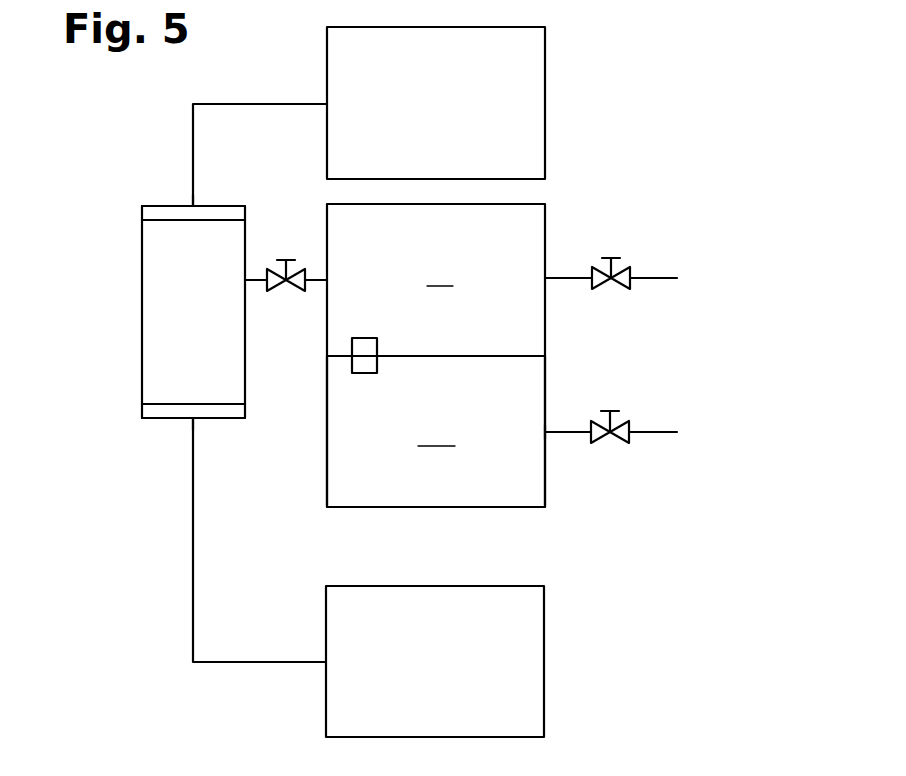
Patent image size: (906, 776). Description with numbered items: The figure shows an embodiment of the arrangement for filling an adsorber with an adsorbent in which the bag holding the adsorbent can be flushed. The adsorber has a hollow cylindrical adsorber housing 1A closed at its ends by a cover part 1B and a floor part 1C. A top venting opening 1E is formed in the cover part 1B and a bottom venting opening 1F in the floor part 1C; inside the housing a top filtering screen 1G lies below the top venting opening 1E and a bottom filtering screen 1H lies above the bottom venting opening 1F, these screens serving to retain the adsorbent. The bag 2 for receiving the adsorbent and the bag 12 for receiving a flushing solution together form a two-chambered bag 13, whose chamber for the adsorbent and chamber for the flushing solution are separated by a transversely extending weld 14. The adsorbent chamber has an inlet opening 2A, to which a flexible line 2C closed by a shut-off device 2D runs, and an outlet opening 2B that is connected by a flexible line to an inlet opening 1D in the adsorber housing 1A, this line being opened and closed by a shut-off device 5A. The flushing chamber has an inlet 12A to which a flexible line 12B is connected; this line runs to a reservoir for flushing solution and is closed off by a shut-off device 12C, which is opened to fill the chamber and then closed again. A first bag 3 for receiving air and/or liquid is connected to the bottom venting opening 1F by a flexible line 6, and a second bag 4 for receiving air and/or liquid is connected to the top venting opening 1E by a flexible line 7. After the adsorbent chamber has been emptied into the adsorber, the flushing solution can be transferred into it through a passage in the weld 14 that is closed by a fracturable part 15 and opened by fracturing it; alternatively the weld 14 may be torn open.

The adsorber housing 1A is at (142, 310).
The cover part 1B is at (167, 206).
The floor part 1C is at (165, 418).
The inlet opening 1D is at (250, 270).
The top venting opening 1E is at (195, 206).
The bottom venting opening 1F is at (193, 418).
The top filtering screen 1G is at (172, 220).
The bottom filtering screen 1H is at (172, 404).
The bag for receiving the adsorbent 2 is at (583, 232).
The inlet opening 2A is at (546, 275).
The outlet opening 2B is at (323, 270).
The flexible line 2C is at (658, 277).
The shut-off device 2D is at (621, 268).
The first bag for receiving air and/or liquid 3 is at (582, 462).
The second bag for receiving air and/or liquid 4 is at (584, 107).
The shut-off device 5A is at (283, 290).
The flexible line 6 is at (192, 553).
The flexible line 7 is at (263, 103).
The bag for receiving a flushing solution 12 is at (547, 397).
The inlet 12A is at (546, 435).
The flexible line 12B is at (658, 430).
The shut-off device 12C is at (620, 420).
The two-chambered bag 13 is at (355, 512).
The weld 14 is at (503, 356).
The fracturable part 15 is at (365, 338).